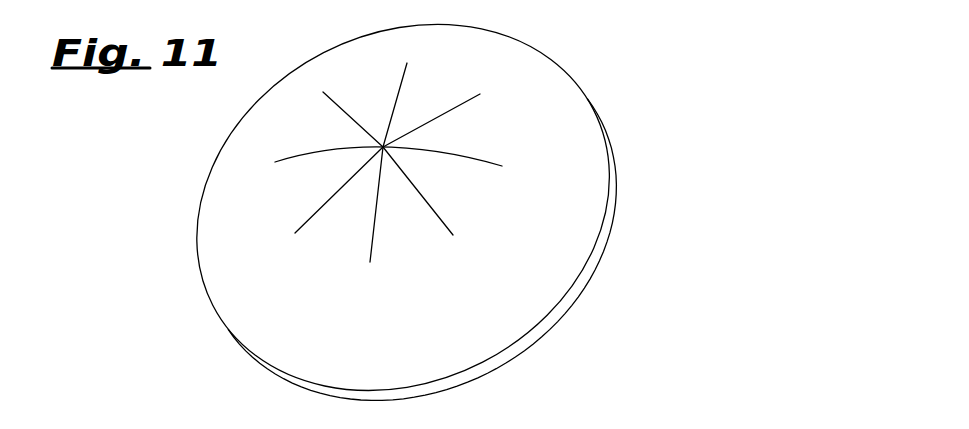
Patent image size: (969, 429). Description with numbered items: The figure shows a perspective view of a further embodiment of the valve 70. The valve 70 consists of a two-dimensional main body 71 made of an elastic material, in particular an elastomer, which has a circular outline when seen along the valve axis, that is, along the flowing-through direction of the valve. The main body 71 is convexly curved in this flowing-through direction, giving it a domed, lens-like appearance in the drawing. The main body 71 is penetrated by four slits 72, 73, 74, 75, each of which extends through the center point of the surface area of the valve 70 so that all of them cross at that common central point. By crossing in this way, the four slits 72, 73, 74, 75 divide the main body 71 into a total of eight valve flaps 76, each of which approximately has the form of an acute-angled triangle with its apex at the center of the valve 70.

The valve 70 is at (375, 214).
The main body 71 is at (233, 267).
The slit 72 is at (467, 102).
The slit 73 is at (480, 163).
The slit 74 is at (448, 238).
The slit 75 is at (362, 258).
The valve flaps 76 is at (378, 103).